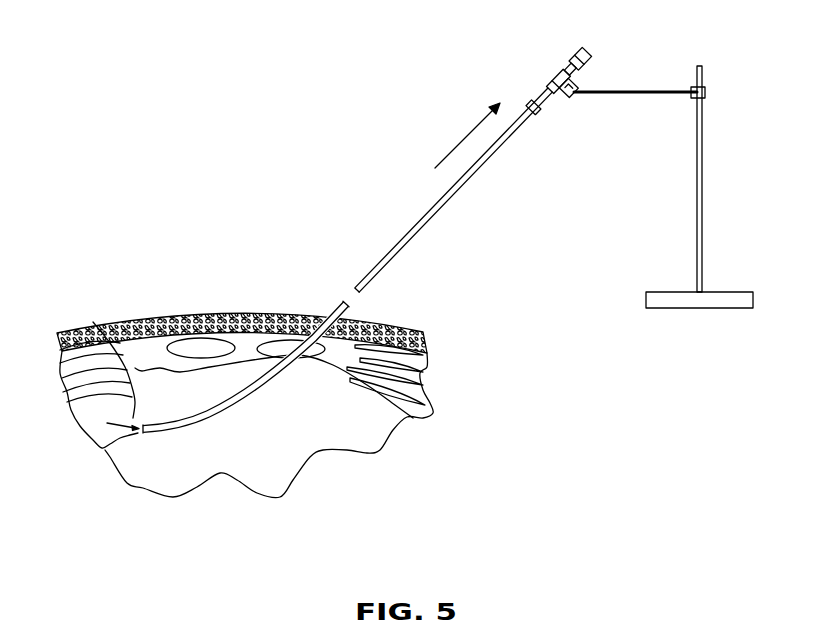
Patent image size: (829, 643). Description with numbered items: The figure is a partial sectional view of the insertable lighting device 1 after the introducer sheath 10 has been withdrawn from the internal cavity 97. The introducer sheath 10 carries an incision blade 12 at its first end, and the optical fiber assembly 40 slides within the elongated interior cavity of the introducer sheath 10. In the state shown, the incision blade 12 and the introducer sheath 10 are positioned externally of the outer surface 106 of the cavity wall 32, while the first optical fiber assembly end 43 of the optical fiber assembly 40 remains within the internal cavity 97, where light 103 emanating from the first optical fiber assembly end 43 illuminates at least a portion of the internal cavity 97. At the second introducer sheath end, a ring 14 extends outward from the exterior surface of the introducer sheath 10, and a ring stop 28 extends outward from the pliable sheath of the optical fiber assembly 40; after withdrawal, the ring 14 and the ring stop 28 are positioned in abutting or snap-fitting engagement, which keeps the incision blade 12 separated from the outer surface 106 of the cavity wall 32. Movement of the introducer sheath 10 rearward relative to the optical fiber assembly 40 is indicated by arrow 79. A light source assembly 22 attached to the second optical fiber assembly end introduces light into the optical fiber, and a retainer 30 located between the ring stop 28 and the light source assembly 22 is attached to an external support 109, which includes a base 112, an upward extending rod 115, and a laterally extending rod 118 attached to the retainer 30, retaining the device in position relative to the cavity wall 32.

The insertable lighting device 1 is at (347, 177).
The introducer sheath 10 is at (446, 200).
The incision blade 12 is at (388, 250).
The ring 14 is at (538, 110).
The light source assembly 22 is at (577, 54).
The ring stop 28 is at (528, 108).
The retainer 30 is at (583, 80).
The cavity wall 32 is at (218, 312).
The optical fiber assembly 40 is at (255, 385).
The first optical fiber assembly end 43 is at (104, 448).
The arrow 79 is at (462, 137).
The internal cavity 97 is at (366, 433).
The light 103 is at (100, 323).
The outer surface of the cavity wall 106 is at (397, 326).
The external support 109 is at (697, 187).
The base 112 is at (730, 290).
The upward extending rod 115 is at (702, 116).
The laterally extending rod 118 is at (658, 97).